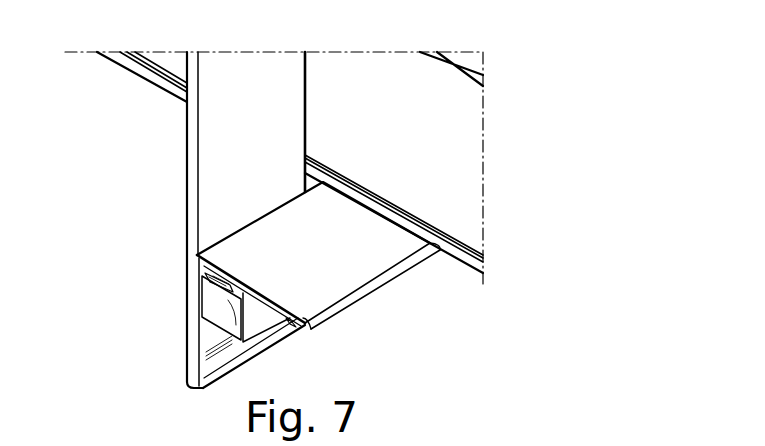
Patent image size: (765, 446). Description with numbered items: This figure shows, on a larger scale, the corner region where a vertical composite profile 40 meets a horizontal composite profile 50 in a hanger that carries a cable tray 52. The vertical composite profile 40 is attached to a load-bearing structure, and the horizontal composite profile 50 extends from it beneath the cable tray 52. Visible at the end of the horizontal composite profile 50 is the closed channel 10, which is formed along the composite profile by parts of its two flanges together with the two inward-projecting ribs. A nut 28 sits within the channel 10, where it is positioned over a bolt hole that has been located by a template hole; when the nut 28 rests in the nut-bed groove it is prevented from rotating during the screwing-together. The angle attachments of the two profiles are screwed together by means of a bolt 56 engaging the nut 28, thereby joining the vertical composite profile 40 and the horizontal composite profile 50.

The vertical composite profile 40 is at (228, 148).
The cable tray 52 is at (446, 157).
The horizontal composite profile 50 is at (352, 268).
The nut 28 is at (220, 279).
The channel 10 is at (200, 300).
The bolt 56 is at (291, 323).